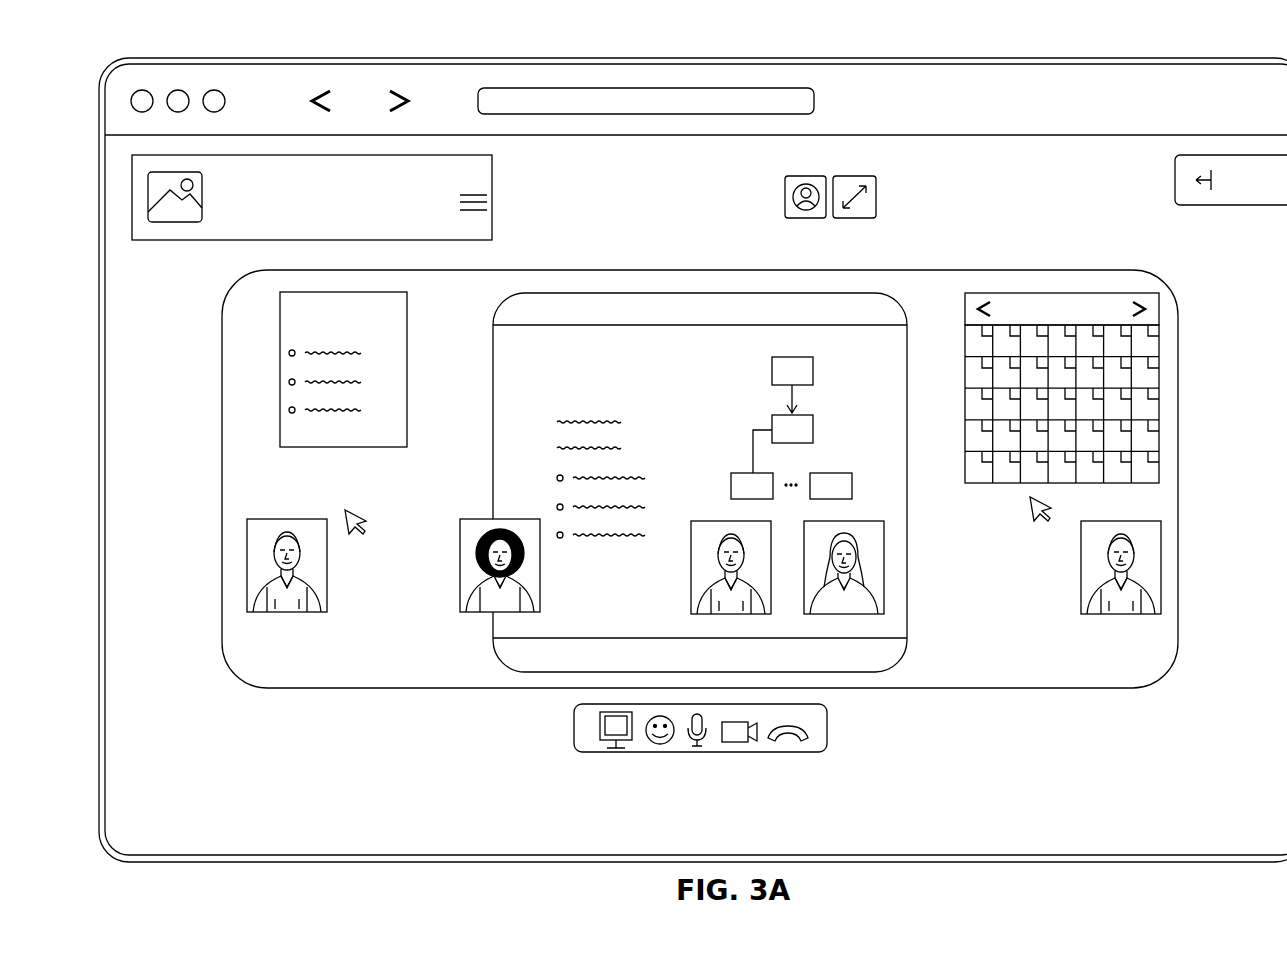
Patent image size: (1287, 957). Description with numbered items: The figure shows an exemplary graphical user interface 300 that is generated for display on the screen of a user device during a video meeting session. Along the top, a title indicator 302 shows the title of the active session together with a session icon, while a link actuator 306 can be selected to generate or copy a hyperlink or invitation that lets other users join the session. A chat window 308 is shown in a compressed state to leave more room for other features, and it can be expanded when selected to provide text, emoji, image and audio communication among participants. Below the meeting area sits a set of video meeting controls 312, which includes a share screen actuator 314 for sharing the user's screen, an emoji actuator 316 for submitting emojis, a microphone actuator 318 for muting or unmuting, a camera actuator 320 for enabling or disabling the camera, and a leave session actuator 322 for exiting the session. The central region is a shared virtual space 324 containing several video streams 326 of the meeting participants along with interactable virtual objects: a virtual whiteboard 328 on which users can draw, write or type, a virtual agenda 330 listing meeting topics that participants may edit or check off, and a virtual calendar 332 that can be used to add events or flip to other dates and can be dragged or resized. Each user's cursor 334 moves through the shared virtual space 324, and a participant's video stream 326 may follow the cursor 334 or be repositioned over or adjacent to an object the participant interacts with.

The graphical user interface 300 is at (135, 43).
The title indicator 302 is at (147, 192).
The link actuator 306 is at (853, 175).
The chat window 308 is at (1175, 180).
The set of video meeting controls 312 is at (713, 765).
The share screen actuator 314 is at (600, 725).
The emoji actuator 316 is at (660, 744).
The microphone actuator 318 is at (698, 746).
The camera actuator 320 is at (740, 742).
The leave session actuator 322 is at (800, 741).
The shared virtual space 324 is at (222, 455).
The video streams 326 is at (247, 572).
The virtual whiteboard 328 is at (493, 370).
The virtual agenda 330 is at (280, 335).
The virtual calendar 332 is at (1160, 313).
The cursor 334 is at (358, 514).